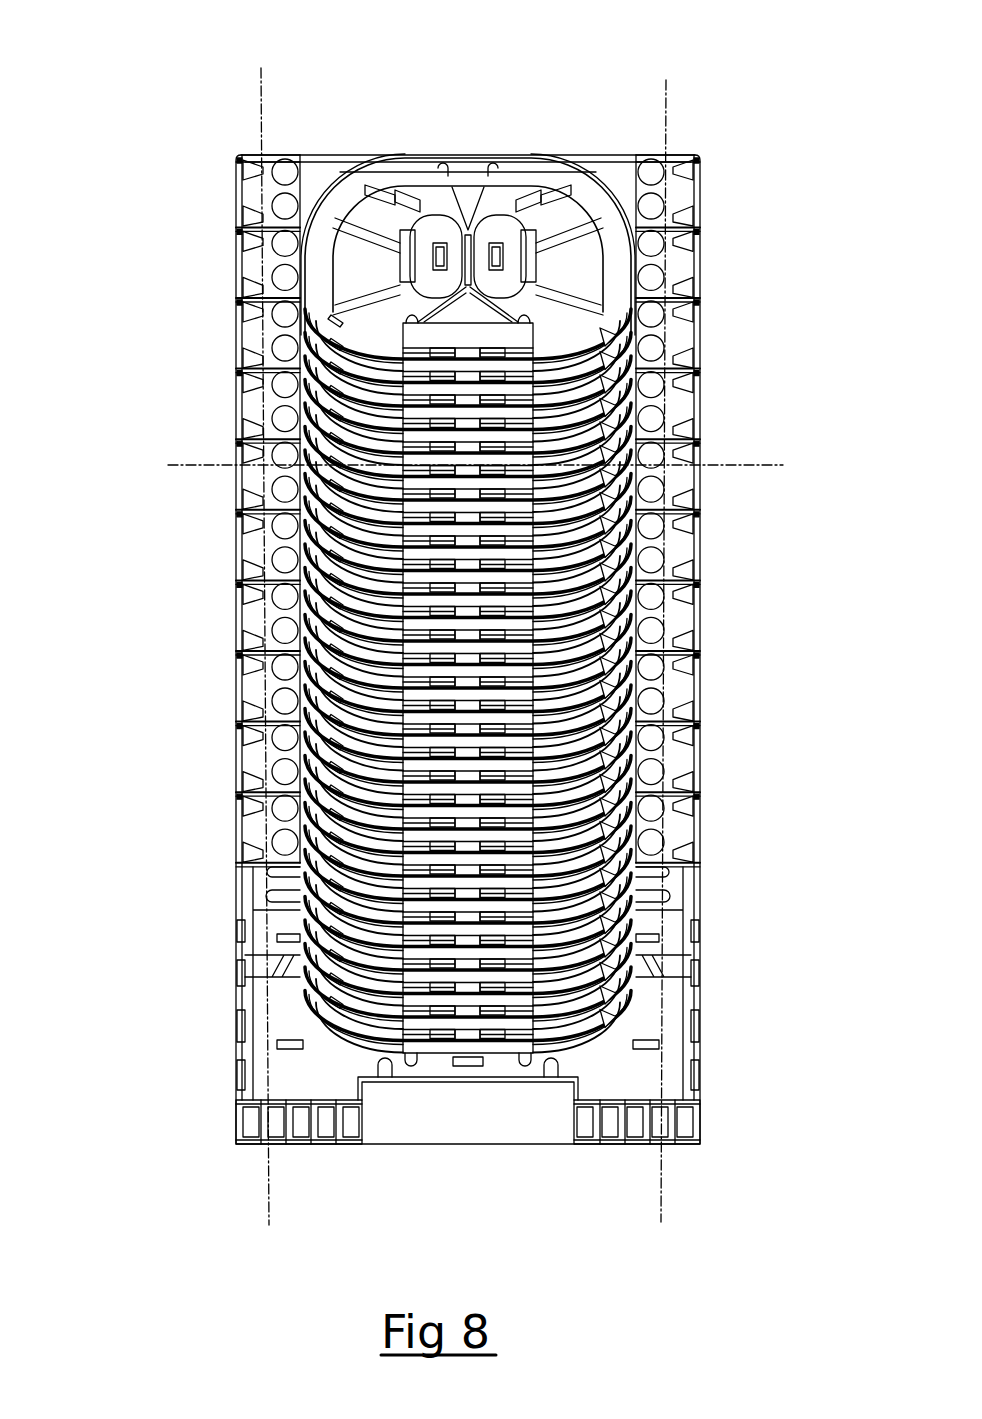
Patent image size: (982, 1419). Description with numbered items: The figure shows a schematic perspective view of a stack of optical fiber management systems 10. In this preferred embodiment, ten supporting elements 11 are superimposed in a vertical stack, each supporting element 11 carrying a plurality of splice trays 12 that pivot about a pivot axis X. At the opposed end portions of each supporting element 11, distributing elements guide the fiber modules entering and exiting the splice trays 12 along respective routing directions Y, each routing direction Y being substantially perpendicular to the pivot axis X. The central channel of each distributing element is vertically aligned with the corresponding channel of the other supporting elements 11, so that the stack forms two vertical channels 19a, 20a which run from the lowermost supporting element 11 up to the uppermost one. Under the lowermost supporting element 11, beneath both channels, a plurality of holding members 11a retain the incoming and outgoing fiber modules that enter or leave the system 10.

The optical fiber management system 10 is at (788, 205).
The supporting element 11 is at (237, 183).
The holding members 11a is at (633, 1135).
The splice trays 12 is at (352, 551).
The vertical channel 19a is at (288, 155).
The vertical channel 20a is at (652, 155).
The pivot axis X is at (192, 471).
The routing direction Y is at (258, 103).